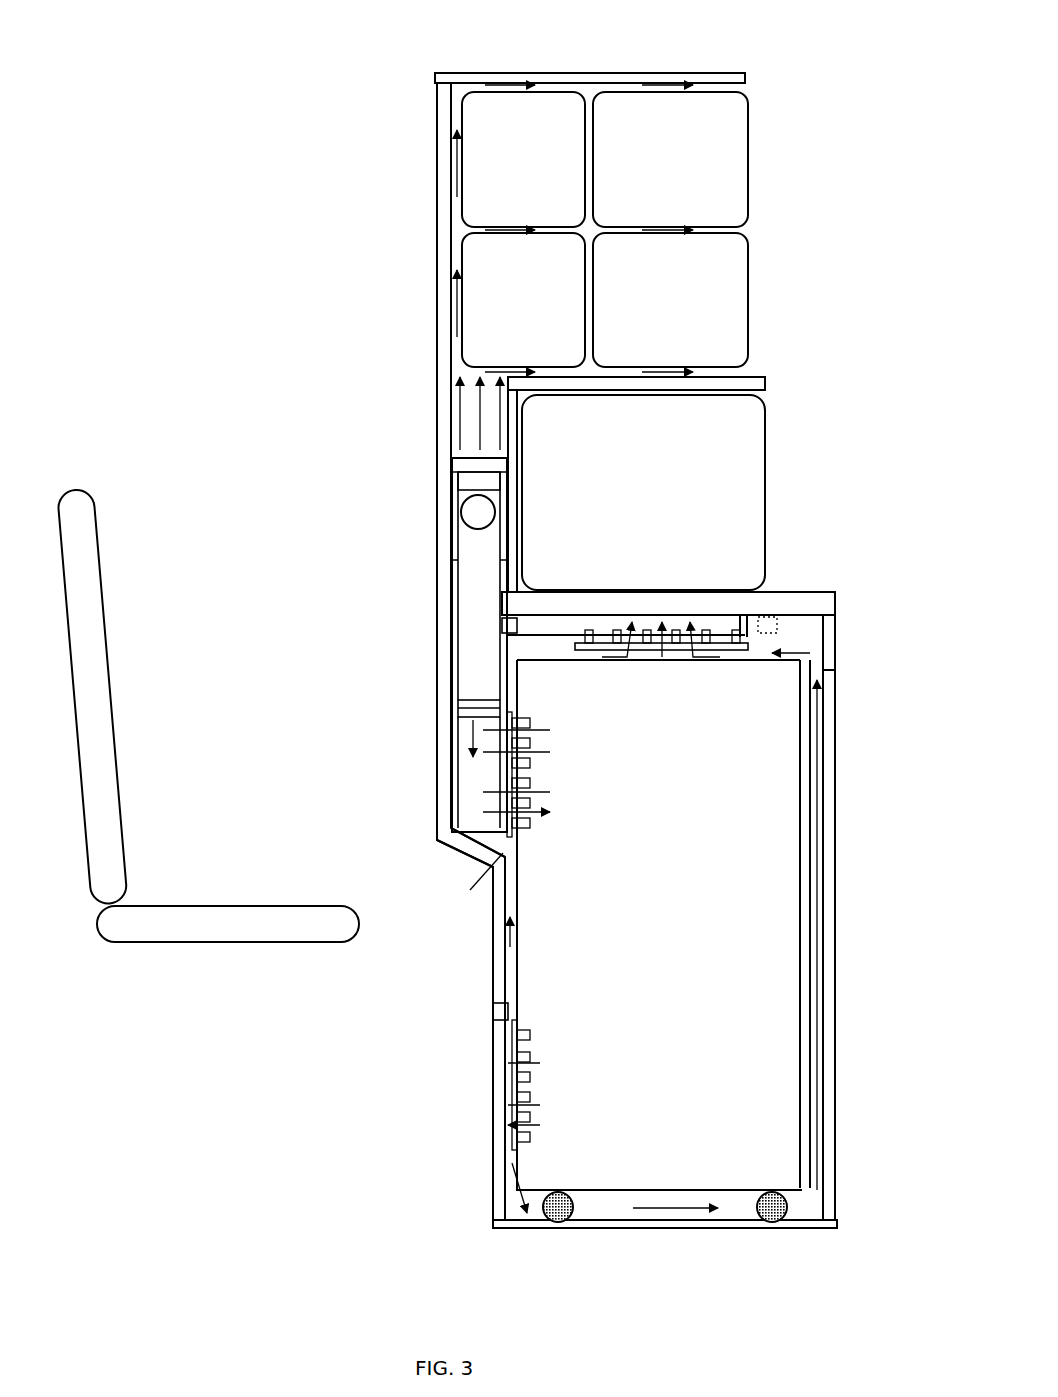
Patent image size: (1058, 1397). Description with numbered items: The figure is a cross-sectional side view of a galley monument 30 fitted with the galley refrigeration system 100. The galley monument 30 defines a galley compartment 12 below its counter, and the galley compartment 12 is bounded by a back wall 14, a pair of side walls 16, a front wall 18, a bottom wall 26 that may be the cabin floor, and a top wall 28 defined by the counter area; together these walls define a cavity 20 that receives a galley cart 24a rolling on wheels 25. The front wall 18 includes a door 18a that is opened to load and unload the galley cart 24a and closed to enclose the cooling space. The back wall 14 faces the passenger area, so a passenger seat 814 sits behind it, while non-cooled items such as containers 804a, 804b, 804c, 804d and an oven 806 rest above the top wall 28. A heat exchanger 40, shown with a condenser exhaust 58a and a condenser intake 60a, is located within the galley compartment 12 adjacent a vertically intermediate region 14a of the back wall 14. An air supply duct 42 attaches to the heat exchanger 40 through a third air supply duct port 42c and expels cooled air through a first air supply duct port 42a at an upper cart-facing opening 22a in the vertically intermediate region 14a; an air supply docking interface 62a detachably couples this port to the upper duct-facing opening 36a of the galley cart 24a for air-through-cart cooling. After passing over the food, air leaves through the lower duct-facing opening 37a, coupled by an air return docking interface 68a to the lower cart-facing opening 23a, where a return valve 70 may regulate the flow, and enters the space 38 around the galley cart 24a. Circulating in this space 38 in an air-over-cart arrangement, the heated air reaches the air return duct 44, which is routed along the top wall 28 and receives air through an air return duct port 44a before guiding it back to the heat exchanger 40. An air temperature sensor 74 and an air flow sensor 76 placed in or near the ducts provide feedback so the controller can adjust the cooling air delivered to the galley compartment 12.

The galley refrigeration system 100 is at (678, 45).
The galley monument 30 is at (337, 230).
The container 804a is at (548, 186).
The container 804b is at (695, 186).
The container 804c is at (547, 308).
The container 804d is at (695, 308).
The oven 806 is at (661, 503).
The passenger seat 814 is at (80, 562).
The condenser exhaust 58a is at (470, 482).
The condenser intake 60a is at (477, 508).
The heat exchanger 40 is at (491, 563).
The air return duct port 44a is at (510, 623).
The third air supply duct port 42c is at (463, 707).
The air supply duct 42 is at (463, 757).
The upper cart-facing opening 22a is at (510, 774).
The upper duct-facing opening 36a is at (520, 773).
The first air supply duct port 42a is at (502, 802).
The vertically intermediate region 14a is at (478, 833).
The air supply docking interface 62a is at (505, 845).
The galley compartment 12 is at (805, 583).
The top wall 28 is at (800, 598).
The front wall 18 is at (835, 656).
The door 18a is at (835, 770).
The air flow sensor 76 is at (765, 617).
The air return duct 44 is at (680, 653).
The cavity 20 is at (672, 741).
The galley cart 24a is at (812, 1025).
The side wall 16 is at (762, 852).
The back wall 14 is at (493, 1050).
The return valve 70 is at (508, 997).
The air temperature sensor 74 is at (493, 1012).
The lower cart-facing opening 23a is at (505, 1098).
The lower duct-facing opening 37a is at (517, 1088).
The air return docking interface 68a is at (505, 1158).
The wheel 25 is at (556, 1223).
The bottom wall 26 is at (672, 1228).
The space 38 is at (737, 1203).